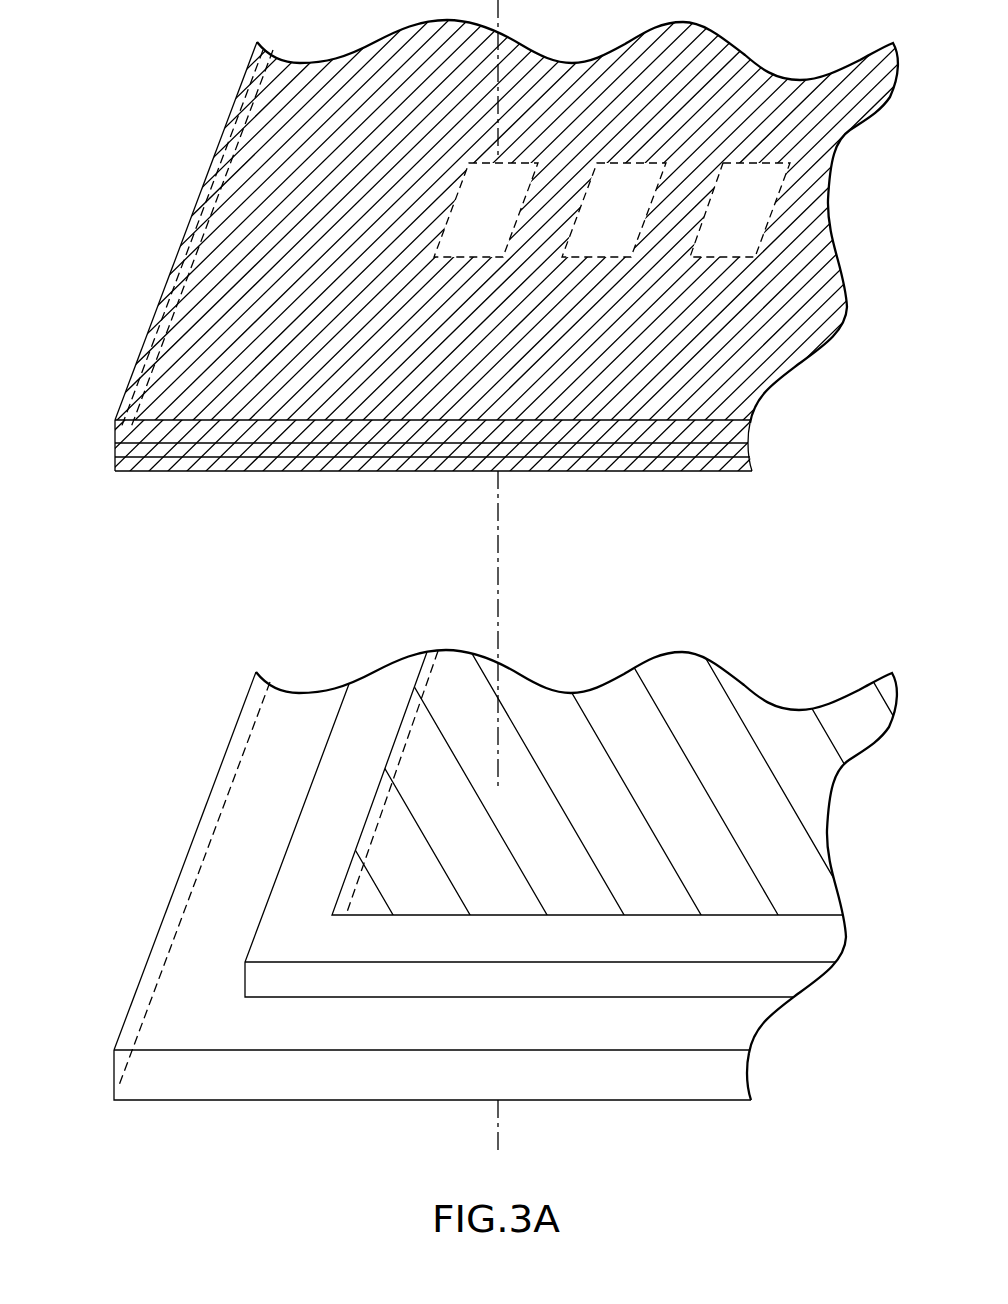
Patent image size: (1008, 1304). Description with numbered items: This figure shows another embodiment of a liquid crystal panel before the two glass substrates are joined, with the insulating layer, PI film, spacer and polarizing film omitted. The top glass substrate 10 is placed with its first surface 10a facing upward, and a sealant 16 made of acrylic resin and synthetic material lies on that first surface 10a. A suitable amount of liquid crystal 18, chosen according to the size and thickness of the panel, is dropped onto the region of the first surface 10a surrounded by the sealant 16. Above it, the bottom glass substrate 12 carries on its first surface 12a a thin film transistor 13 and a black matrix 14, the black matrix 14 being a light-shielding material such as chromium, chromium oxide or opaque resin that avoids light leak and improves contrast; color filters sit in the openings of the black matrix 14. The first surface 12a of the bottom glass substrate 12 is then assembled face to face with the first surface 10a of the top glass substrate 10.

The top glass substrate 10 is at (145, 1073).
The first surface of the top glass substrate 10a is at (215, 1015).
The bottom glass substrate 12 is at (128, 398).
The first surface of the bottom glass substrate 12a is at (163, 445).
The thin film transistor 13 is at (205, 452).
The black matrix 14 is at (290, 460).
The sealant 16 is at (340, 940).
The liquid crystal 18 is at (410, 860).